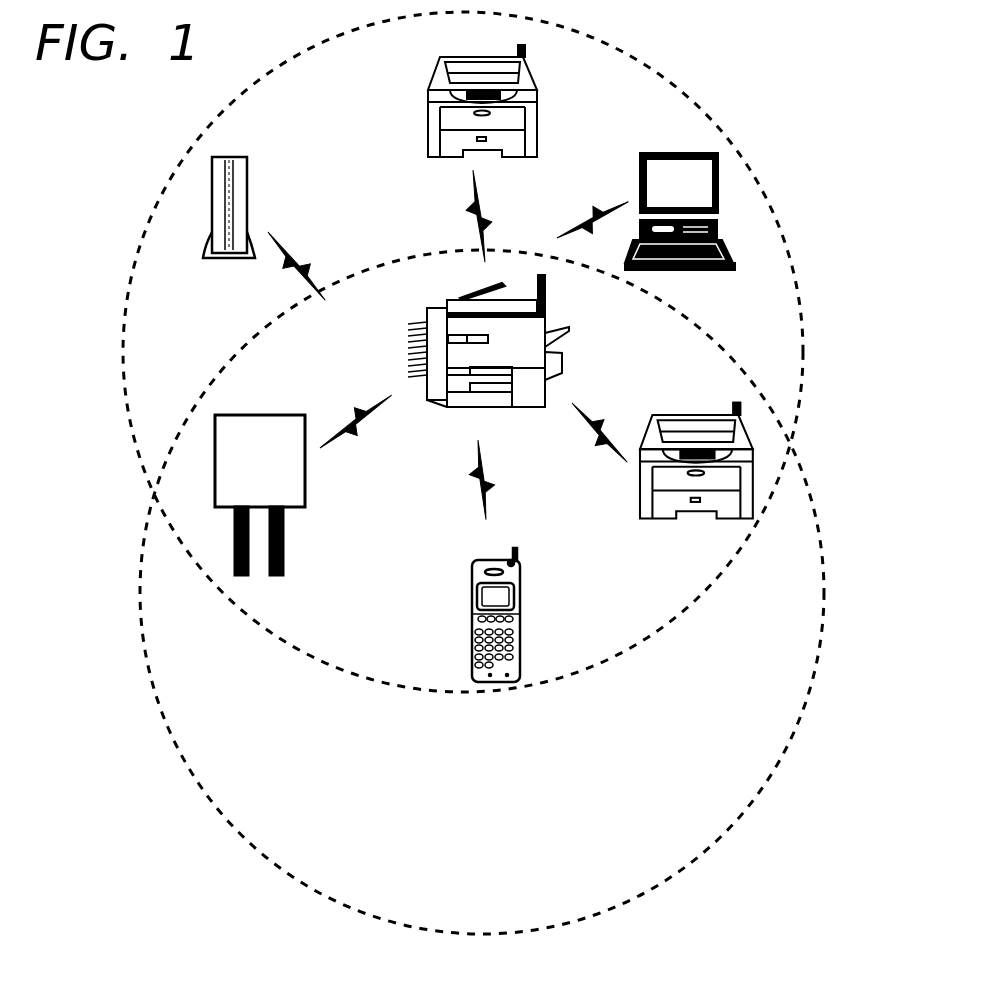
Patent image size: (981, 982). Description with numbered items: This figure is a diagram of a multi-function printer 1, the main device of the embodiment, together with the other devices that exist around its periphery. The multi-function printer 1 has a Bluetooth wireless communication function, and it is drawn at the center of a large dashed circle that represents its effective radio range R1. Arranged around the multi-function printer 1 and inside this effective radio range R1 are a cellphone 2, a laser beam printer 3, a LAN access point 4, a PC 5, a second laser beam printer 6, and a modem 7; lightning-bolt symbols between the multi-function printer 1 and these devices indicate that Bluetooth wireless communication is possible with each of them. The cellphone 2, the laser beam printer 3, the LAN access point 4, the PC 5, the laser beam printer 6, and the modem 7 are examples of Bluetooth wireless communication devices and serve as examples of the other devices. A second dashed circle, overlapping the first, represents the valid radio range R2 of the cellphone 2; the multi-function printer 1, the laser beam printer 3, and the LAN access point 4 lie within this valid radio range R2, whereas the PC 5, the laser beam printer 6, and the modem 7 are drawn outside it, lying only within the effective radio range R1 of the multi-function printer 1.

The multi-function printer 1 is at (547, 322).
The cellphone 2 is at (518, 573).
The laser beam printer 3 is at (640, 495).
The LAN access point 4 is at (305, 490).
The PC 5 is at (640, 168).
The LBP 6 is at (425, 120).
The modem 7 is at (248, 182).
The effective radio range R1 is at (648, 70).
The valid radio range R2 is at (208, 795).